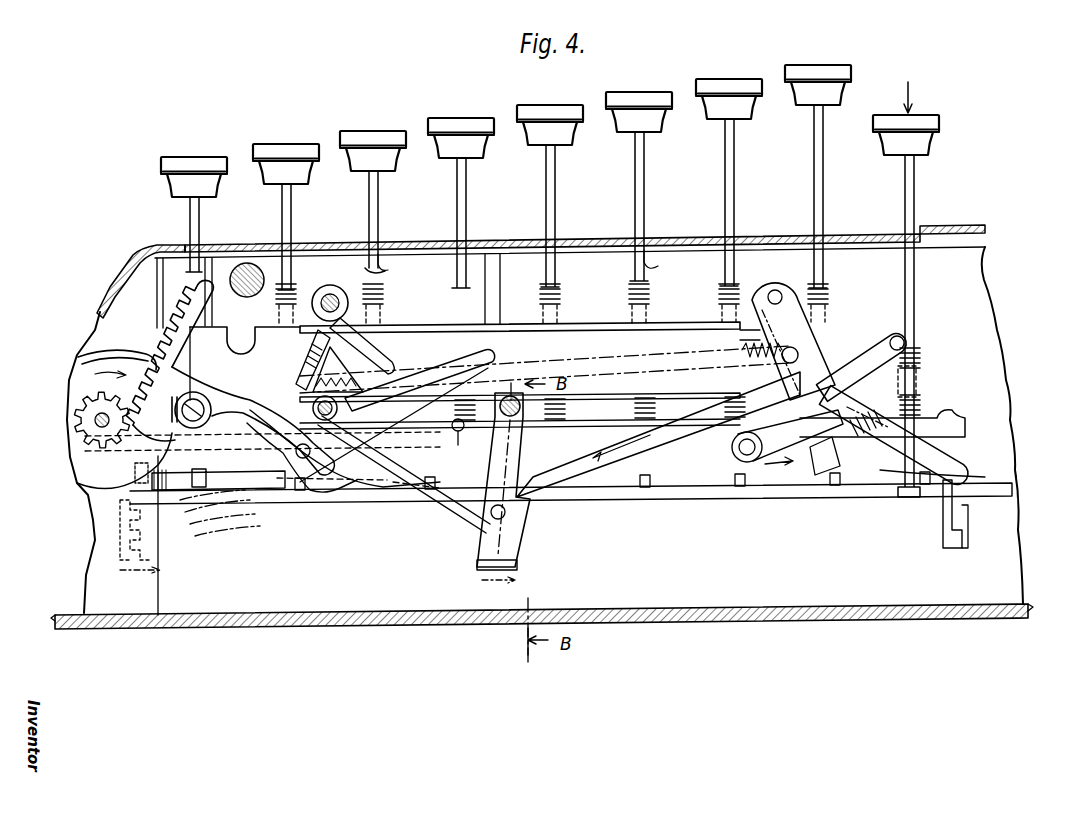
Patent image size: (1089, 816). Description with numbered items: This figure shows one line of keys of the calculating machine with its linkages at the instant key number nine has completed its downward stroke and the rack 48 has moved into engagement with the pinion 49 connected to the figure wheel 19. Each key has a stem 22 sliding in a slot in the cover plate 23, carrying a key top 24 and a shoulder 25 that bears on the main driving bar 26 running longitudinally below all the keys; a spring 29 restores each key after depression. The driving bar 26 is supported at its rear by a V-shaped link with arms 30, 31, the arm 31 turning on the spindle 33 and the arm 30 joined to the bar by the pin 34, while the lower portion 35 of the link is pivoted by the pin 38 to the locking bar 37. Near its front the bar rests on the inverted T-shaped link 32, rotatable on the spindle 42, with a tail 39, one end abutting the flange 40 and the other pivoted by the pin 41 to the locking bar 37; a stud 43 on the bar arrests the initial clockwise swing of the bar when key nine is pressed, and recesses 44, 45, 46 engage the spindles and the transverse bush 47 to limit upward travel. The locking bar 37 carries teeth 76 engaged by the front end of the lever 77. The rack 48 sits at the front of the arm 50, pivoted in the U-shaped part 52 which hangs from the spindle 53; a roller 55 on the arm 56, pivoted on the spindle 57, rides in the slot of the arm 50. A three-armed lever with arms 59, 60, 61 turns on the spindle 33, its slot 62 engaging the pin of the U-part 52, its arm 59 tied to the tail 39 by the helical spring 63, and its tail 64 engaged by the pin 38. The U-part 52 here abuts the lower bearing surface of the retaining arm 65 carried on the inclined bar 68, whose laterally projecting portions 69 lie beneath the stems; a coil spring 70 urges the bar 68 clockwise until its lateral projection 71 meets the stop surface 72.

The figure wheel 19 is at (92, 366).
The key stem 22 is at (642, 177).
The cover plate 23 is at (322, 243).
The key top 24 is at (455, 125).
The shoulder 25 is at (392, 238).
The main driving bar 26 is at (491, 295).
The spring 29 is at (292, 286).
The arm of V-shaped link 30 is at (862, 370).
The arm of V-shaped link 31 is at (752, 385).
The link 32 is at (367, 363).
The spindle 33 is at (772, 292).
The pin 34 is at (905, 343).
The lower portion of V-link 35 is at (720, 471).
The locking bar 37 is at (967, 421).
The pin 38 is at (748, 455).
The tail 39 is at (302, 361).
The flange 40 is at (590, 322).
The pin 41 is at (305, 459).
The spindle 42 is at (333, 291).
The stud 43 is at (457, 440).
The recess 44 is at (805, 339).
The recess 45 is at (385, 300).
The recess 46 is at (243, 354).
The transverse bush 47 is at (242, 264).
The rack 48 is at (165, 338).
The pinion 49 is at (78, 413).
The arm 50 is at (357, 470).
The U-shaped part 52 is at (506, 470).
The spindle 53 is at (511, 392).
The roller 55 is at (225, 458).
The arm 56 is at (300, 398).
The spindle 57 is at (352, 403).
The arm of three-armed lever 59 is at (795, 322).
The arm of three-armed lever 60 is at (925, 445).
The arm of three-armed lever 61 is at (640, 471).
The slot 62 is at (418, 500).
The helical spring 63 is at (640, 357).
The tail 64 is at (830, 446).
The retaining arm 65 is at (478, 526).
The bar 68 is at (672, 496).
The laterally projecting portion 69 is at (286, 491).
The coil spring 70 is at (130, 491).
The lateral projection 71 is at (948, 537).
The stop surface 72 is at (956, 541).
The teeth 76 is at (861, 441).
The lever 77 is at (982, 478).